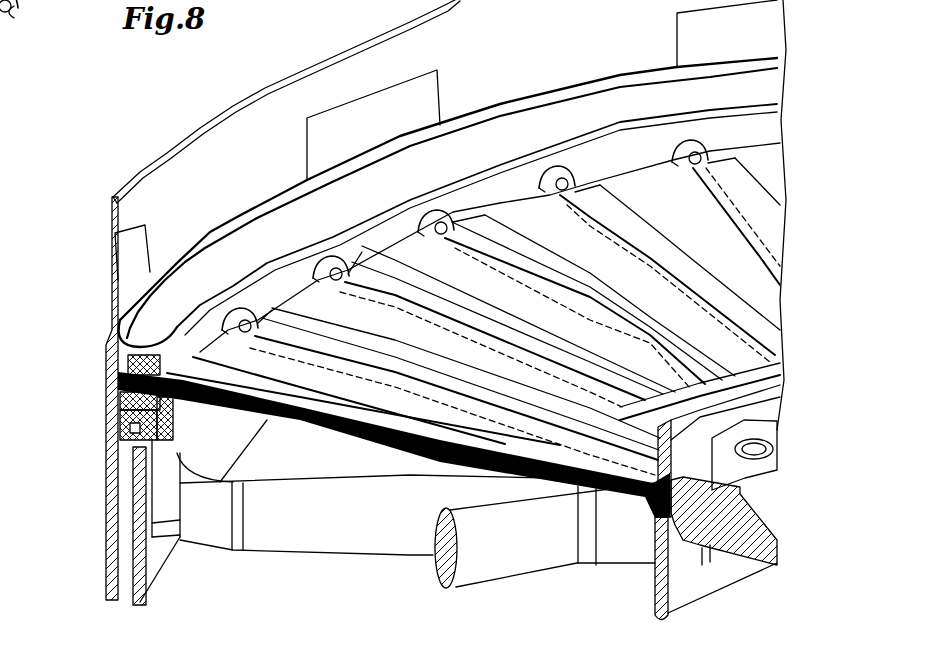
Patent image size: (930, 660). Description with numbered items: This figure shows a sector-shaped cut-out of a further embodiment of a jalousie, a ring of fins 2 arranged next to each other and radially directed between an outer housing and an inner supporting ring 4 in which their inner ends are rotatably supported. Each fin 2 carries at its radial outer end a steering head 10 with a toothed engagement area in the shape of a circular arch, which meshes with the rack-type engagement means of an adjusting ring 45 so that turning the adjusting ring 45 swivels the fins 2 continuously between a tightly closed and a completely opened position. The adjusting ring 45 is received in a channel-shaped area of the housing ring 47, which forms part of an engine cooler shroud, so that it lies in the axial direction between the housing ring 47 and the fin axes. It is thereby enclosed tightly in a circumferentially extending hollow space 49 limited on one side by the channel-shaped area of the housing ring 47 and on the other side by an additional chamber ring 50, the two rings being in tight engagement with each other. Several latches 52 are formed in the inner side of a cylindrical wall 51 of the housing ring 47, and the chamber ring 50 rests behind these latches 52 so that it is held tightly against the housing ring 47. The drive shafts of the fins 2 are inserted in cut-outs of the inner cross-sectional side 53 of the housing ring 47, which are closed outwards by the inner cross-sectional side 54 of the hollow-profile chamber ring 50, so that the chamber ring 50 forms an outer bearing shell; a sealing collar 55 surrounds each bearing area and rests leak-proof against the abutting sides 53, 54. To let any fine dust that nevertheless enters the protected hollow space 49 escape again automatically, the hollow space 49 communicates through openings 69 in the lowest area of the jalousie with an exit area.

The fin 2 is at (449, 338).
The supporting ring 4 is at (480, 496).
The steering head 10 is at (101, 365).
The adjusting ring 45 is at (94, 401).
The housing ring 47 is at (111, 506).
The hollow space 49 is at (88, 399).
The chamber ring 50 is at (237, 253).
The cylindrical wall 51 is at (320, 94).
The latch 52 is at (446, 140).
The inner cross-sectional side of the housing ring 53 is at (180, 429).
The inner cross-sectional side of the chamber ring 54 is at (482, 232).
The sealing collar 55 is at (354, 167).
The opening 69 is at (137, 423).